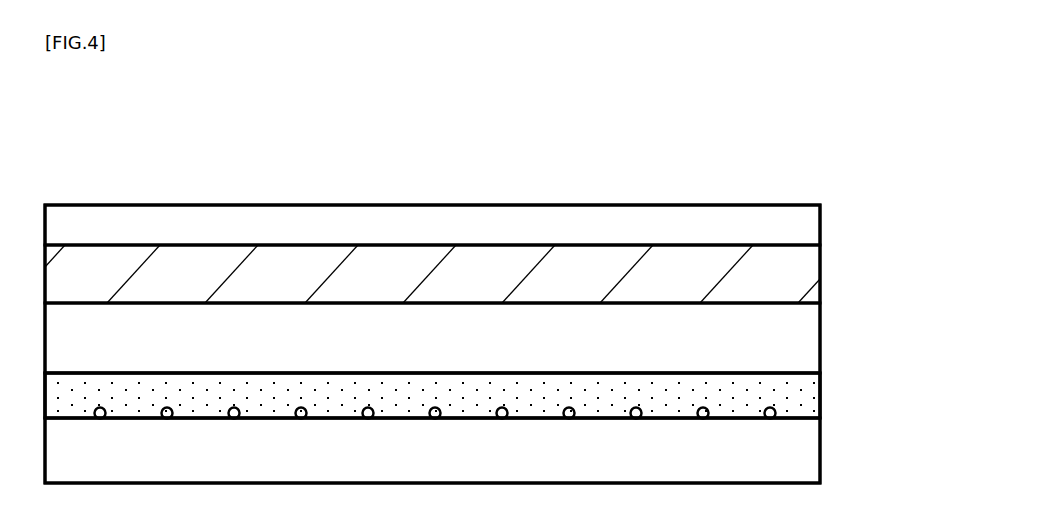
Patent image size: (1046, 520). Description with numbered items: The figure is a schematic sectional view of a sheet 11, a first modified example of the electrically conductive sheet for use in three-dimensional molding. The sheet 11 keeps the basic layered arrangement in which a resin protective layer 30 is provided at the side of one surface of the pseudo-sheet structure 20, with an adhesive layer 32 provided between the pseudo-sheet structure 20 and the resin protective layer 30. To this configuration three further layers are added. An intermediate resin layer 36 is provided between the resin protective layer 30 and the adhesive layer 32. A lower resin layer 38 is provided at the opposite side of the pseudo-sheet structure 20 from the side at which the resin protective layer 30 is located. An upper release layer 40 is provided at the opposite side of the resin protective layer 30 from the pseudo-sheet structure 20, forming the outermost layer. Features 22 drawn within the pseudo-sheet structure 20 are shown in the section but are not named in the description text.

The sheet 11 is at (845, 157).
The release layer 40 is at (803, 223).
The resin protective layer 30 is at (800, 281).
The resin layer 36 is at (805, 332).
The adhesive layer 32 is at (805, 385).
The pseudo-sheet structure 20 is at (793, 413).
The particles 22 is at (502, 408).
The resin layer 38 is at (812, 453).